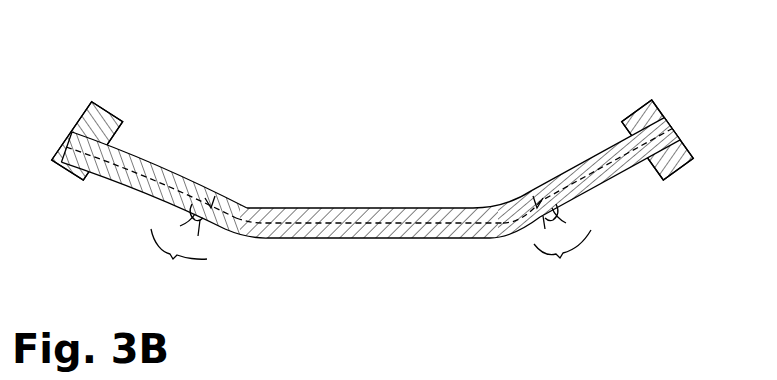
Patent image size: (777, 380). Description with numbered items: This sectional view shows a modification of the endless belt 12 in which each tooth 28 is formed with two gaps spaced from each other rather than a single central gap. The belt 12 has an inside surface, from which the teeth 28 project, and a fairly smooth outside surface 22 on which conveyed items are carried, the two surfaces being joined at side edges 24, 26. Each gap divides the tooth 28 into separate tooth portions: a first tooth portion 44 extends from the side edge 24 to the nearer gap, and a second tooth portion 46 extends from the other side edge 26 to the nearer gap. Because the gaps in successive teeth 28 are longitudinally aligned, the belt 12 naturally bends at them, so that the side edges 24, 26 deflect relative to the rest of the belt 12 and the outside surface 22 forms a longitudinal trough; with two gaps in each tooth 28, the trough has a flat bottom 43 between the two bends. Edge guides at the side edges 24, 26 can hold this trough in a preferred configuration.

The endless belt 12 is at (503, 70).
The outside surface 22 is at (598, 170).
The side edge 24 is at (99, 120).
The side edge 26 is at (652, 119).
The tooth 28 is at (640, 173).
The flat bottom 43 is at (368, 208).
The first tooth portion 44 is at (130, 185).
The second tooth portion 46 is at (607, 177).